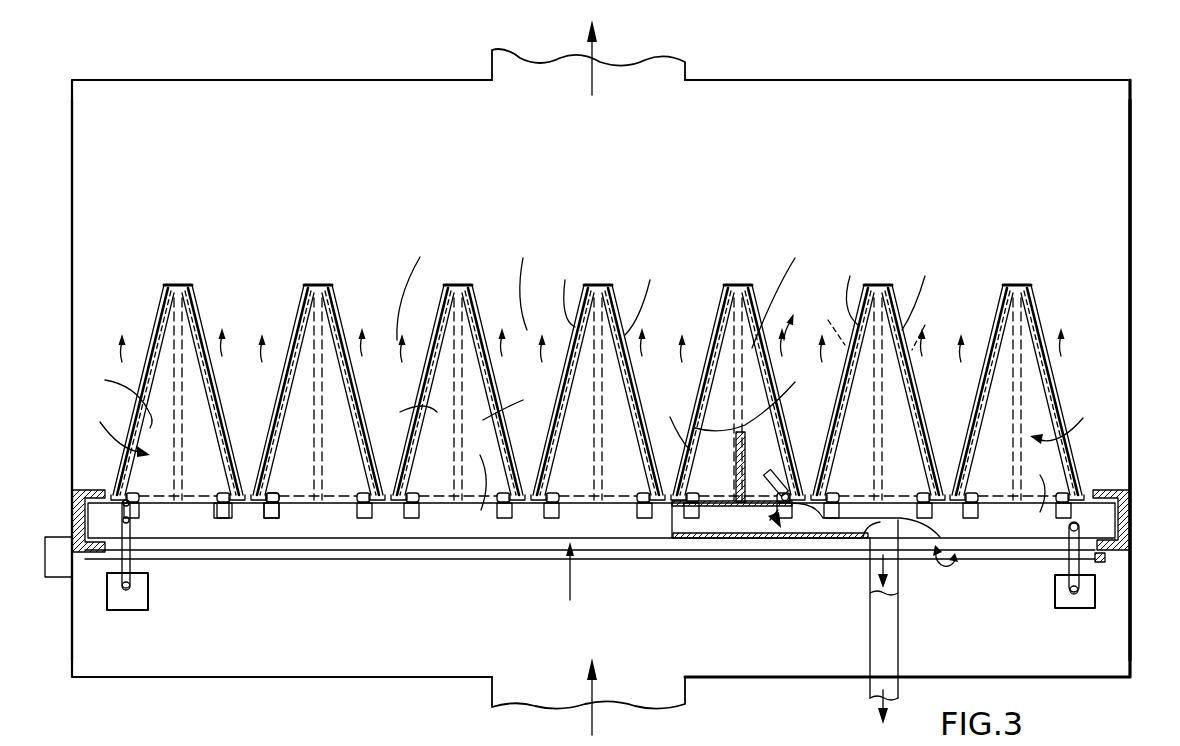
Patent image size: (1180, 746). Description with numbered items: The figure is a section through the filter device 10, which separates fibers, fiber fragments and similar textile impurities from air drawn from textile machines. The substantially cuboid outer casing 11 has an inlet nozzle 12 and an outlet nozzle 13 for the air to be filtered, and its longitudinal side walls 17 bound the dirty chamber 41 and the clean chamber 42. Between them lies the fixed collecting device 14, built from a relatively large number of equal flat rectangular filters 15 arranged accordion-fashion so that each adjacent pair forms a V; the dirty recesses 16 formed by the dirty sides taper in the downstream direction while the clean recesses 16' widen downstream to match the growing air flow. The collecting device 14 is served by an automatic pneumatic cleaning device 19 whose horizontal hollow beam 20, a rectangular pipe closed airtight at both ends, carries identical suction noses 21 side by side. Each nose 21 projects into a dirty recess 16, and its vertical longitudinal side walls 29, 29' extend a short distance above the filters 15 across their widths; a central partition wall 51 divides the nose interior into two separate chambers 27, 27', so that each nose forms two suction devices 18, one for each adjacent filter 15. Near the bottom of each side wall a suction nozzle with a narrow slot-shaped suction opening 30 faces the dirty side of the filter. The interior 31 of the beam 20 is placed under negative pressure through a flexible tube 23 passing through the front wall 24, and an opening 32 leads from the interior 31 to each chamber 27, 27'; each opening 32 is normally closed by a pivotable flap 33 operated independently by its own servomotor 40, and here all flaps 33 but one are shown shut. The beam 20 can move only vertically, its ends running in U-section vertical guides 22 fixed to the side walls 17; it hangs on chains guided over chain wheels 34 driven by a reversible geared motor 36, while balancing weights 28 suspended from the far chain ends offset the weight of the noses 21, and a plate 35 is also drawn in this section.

The filter device 10 is at (928, 57).
The outer casing 11 is at (806, 76).
The inlet nozzle 12 is at (683, 696).
The outlet nozzle 13 is at (498, 68).
The collecting device 14 is at (610, 272).
The filter 15 is at (151, 332).
The dirty recess 16 is at (568, 449).
The clean recess 16' is at (466, 287).
The longitudinal side wall 17 is at (71, 146).
The suction device 18 is at (595, 404).
The automatic pneumatic cleaning device 19 is at (561, 581).
The beam 20 is at (333, 523).
The suction nose 21 is at (594, 382).
The vertical guide 22 is at (95, 555).
The flexible tube 23 is at (885, 632).
The front wall 24 is at (303, 680).
The chamber 27 is at (732, 553).
The chamber 27' is at (770, 534).
The balancing weight 28 is at (1072, 608).
The longitudinal side wall of nose 29 is at (703, 289).
The longitudinal side wall of nose 29' is at (782, 293).
The suction opening 30 is at (878, 323).
The interior of beam 31 is at (829, 523).
The opening 32 is at (763, 510).
The pivotable flap 33 is at (285, 496).
The chain wheel 34 is at (132, 565).
The distribution plate 35 is at (448, 560).
The motor 36 is at (57, 560).
The servomotor 40 is at (222, 520).
The dirty chamber 41 is at (405, 645).
The clean chamber 42 is at (391, 172).
The partition wall 51 is at (455, 432).